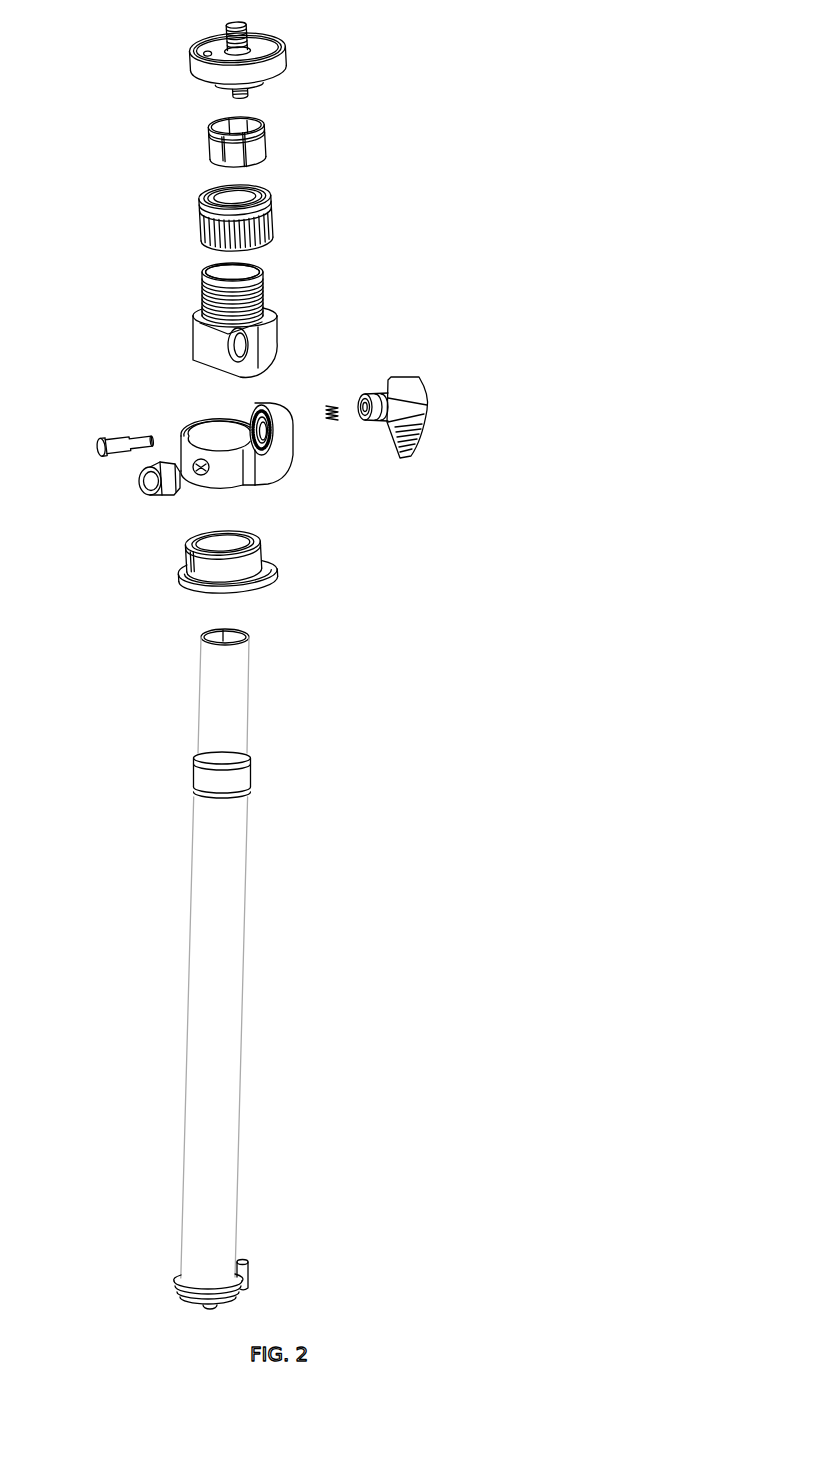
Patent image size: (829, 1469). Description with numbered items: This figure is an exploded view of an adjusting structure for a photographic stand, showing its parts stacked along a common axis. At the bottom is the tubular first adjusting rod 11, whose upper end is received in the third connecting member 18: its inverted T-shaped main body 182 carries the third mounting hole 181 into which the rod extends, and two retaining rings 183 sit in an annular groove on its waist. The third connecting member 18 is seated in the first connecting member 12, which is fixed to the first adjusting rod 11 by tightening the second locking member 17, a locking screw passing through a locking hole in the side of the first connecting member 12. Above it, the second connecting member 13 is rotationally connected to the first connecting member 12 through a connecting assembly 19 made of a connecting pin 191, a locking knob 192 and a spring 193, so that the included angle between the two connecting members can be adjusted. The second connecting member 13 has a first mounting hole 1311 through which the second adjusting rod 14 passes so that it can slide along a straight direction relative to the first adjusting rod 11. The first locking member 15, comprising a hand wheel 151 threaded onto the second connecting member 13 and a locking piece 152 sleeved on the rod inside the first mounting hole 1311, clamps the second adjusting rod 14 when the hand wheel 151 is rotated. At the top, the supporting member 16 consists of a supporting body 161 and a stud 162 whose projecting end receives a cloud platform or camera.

The first adjusting rod 11 is at (228, 1000).
The first connecting member 12 is at (273, 407).
The second connecting member 13 is at (265, 314).
The first mounting hole 1311 is at (210, 262).
The second adjusting rod 14 is at (238, 708).
The first locking member 15 is at (325, 183).
The hand wheel 151 is at (272, 218).
The locking piece 152 is at (264, 126).
The supporting member 16 is at (334, 56).
The supporting body 161 is at (280, 65).
The stud 162 is at (249, 35).
The second locking member 17 is at (145, 493).
The third connecting member 18 is at (313, 536).
The third mounting hole 181 is at (245, 529).
The main body 182 is at (261, 537).
The retaining ring 183 is at (255, 567).
The connecting assembly 19 is at (281, 419).
The connecting pin 191 is at (97, 456).
The locking knob 192 is at (410, 378).
The spring 193 is at (335, 422).